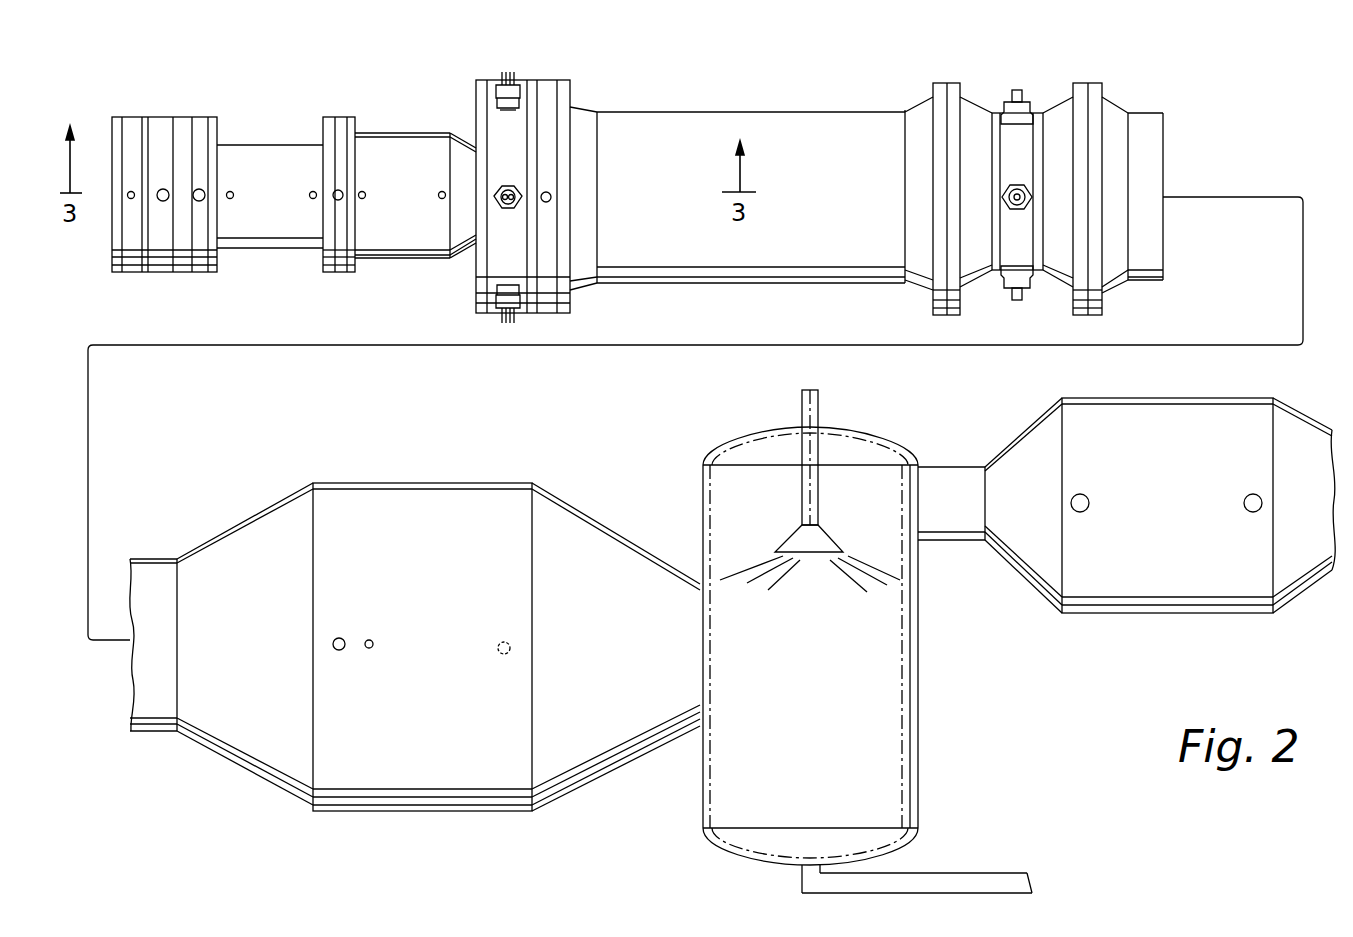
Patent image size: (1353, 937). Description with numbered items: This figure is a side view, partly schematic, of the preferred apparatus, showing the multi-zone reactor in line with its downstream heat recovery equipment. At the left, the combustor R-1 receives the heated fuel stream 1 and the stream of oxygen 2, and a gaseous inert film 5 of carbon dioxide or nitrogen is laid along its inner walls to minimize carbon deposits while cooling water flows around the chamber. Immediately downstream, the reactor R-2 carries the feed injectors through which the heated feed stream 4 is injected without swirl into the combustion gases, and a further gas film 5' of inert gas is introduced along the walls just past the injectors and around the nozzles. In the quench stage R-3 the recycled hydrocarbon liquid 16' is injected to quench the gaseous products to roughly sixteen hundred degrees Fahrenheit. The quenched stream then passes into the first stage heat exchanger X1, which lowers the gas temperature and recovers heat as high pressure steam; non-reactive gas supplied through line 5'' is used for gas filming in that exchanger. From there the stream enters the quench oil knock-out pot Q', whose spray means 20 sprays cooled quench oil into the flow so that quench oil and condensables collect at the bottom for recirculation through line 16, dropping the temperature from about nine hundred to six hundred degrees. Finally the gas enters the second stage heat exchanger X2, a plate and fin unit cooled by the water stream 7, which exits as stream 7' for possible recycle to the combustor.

The fuel stream 1 is at (128, 192).
The stream of oxygen 2 is at (163, 202).
The feed stream 4 is at (504, 74).
The gaseous inert film 5 is at (286, 148).
The gas film 5' is at (582, 175).
The line for non-reactive gas 5'' is at (349, 603).
The water stream 7 is at (1242, 527).
The water stream 7' is at (1096, 481).
The condensed hydrocarbon stream 16 is at (917, 864).
The hydrocarbon liquid 16' is at (1002, 174).
The spray means 20 is at (830, 548).
The combustor section R-1 is at (282, 172).
The reactor chamber R-2 is at (697, 202).
The quench stage R-3 is at (1048, 174).
The first stage heat exchanger X1 is at (415, 616).
The second stage heat exchanger X2 is at (1126, 485).
The quench oil knock-out pot Q' is at (867, 637).